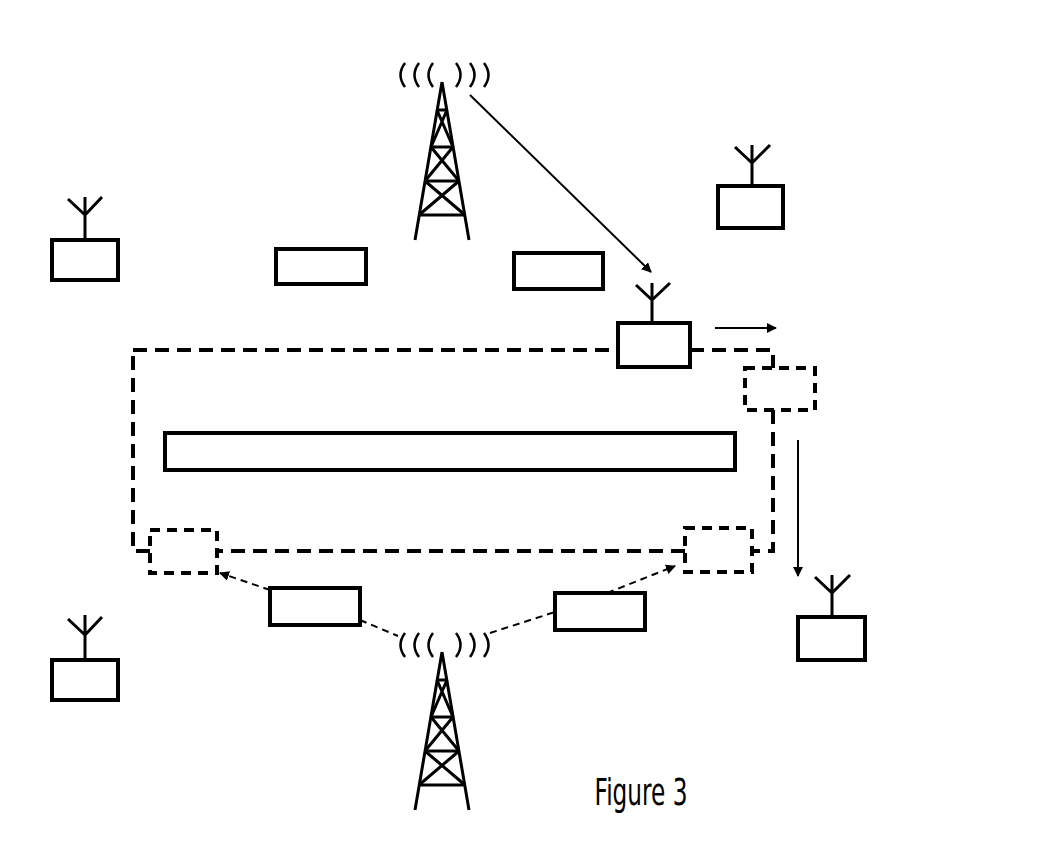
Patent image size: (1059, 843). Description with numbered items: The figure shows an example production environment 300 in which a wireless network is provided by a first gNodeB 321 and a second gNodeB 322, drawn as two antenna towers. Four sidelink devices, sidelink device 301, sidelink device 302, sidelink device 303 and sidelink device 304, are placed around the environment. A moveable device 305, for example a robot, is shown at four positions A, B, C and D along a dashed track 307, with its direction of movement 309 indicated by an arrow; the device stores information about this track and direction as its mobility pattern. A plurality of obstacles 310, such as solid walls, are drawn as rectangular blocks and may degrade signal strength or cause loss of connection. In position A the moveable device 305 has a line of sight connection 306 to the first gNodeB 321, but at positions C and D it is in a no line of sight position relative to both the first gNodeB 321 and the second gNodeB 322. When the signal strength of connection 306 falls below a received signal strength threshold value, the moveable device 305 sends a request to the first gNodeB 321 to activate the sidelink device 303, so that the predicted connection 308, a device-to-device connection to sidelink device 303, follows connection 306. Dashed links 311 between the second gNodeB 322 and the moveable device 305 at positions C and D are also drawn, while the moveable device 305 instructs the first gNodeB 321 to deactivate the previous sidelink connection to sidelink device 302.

The production environment 300 is at (668, 72).
The sidelink device 301 is at (85, 238).
The sidelink device 302 is at (750, 186).
The sidelink device 303 is at (831, 617).
The sidelink device 304 is at (85, 657).
The moveable device 305 is at (481, 445).
The connection 306 is at (597, 216).
The track 307 is at (131, 455).
The connection 308 is at (800, 490).
The direction of movement 309 is at (748, 327).
The obstacles 310 is at (450, 439).
The wireless link to base station 311 is at (247, 584).
The first gNodeB 321 is at (423, 187).
The second gNodeB 322 is at (423, 757).